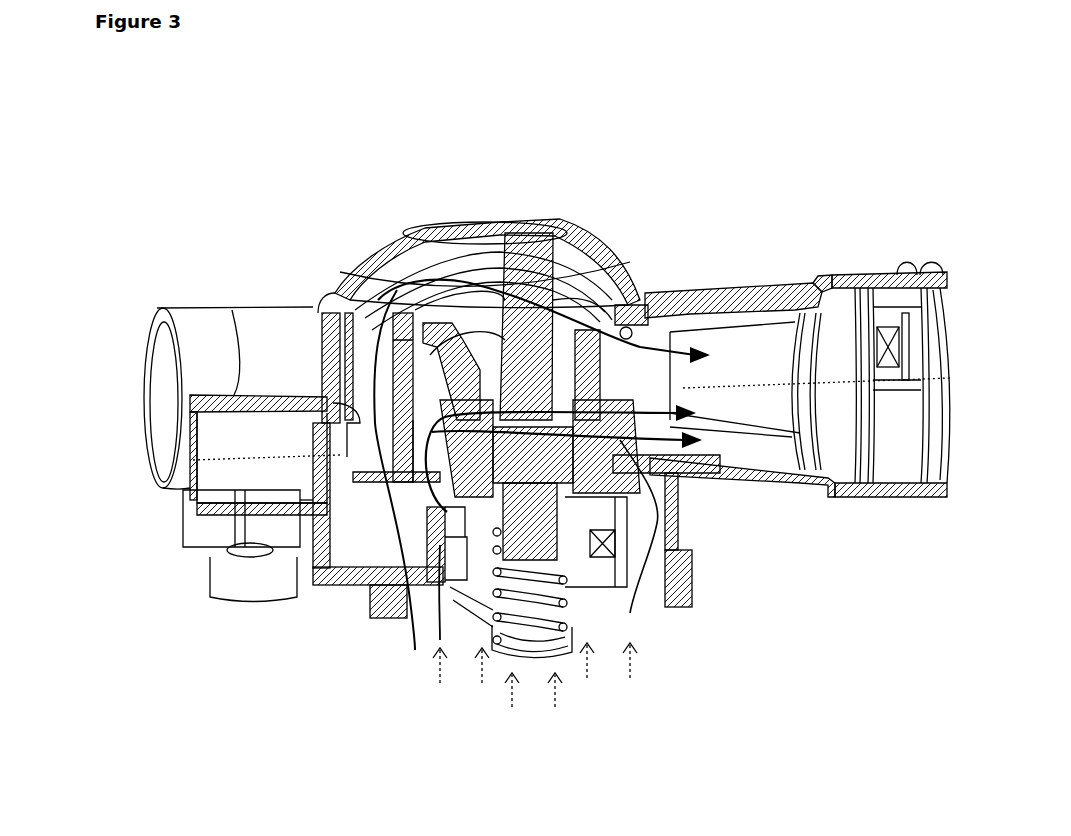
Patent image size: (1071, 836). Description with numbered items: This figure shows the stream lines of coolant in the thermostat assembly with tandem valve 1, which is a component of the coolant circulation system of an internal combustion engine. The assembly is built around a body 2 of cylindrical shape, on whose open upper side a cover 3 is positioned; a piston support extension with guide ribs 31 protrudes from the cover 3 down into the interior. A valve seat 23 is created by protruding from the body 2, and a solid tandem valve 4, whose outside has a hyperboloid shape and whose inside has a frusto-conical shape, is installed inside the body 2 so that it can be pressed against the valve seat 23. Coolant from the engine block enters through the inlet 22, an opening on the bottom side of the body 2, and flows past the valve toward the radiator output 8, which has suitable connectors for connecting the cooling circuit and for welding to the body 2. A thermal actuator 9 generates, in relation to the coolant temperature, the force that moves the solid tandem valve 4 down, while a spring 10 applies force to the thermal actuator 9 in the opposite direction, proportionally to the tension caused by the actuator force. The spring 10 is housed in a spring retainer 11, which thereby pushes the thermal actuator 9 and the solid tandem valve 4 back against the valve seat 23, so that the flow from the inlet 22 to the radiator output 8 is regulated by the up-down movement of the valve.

The thermostat assembly with tandem valve 1 is at (355, 228).
The body 2 is at (320, 545).
The cover 3 is at (506, 222).
The solid tandem valve 4 is at (455, 373).
The radiator output 8 is at (777, 468).
The thermal actuator 9 is at (557, 586).
The spring 10 is at (547, 503).
The spring retainer 11 is at (470, 598).
The inlet 22 is at (588, 598).
The valve seat 23 is at (440, 293).
The piston support extension with guide ribs 31 is at (550, 293).